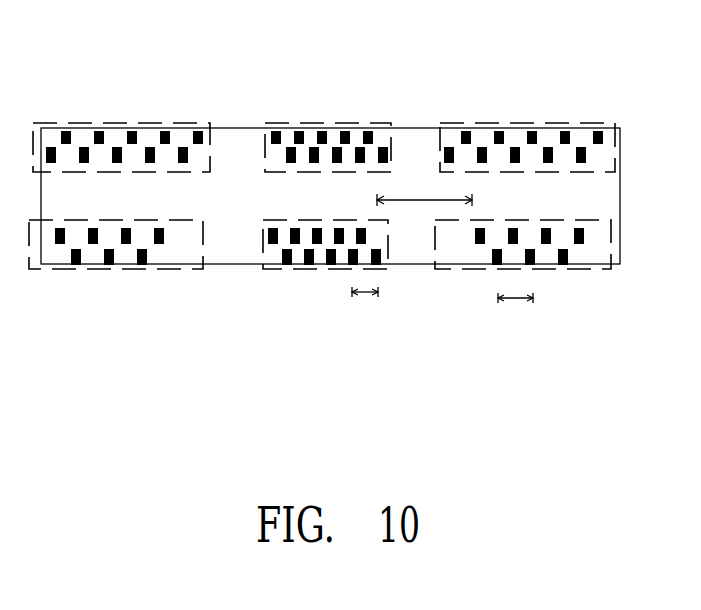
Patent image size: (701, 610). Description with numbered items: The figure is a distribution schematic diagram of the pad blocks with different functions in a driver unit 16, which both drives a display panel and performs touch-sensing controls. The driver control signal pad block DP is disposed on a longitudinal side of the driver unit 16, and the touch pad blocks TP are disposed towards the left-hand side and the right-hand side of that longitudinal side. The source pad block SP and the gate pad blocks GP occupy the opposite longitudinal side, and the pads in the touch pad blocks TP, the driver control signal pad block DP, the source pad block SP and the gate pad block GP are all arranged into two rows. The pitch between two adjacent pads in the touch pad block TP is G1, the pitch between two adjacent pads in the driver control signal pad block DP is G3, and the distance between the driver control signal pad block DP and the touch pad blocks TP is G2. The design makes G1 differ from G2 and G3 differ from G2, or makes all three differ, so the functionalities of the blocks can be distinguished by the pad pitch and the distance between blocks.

The driver unit 16 is at (252, 208).
The gate pad block GP is at (133, 120).
The source pad block SP is at (320, 118).
The touch pad block TP is at (63, 270).
The driver control signal pad block DP is at (310, 270).
The pitch between two adjacent pads in the touch pad block G1 is at (515, 287).
The distance between the driver control signal pad block and the touch pad blocks G2 is at (424, 190).
The pitch between two adjacent pads in the driver control signal pad block G3 is at (366, 281).